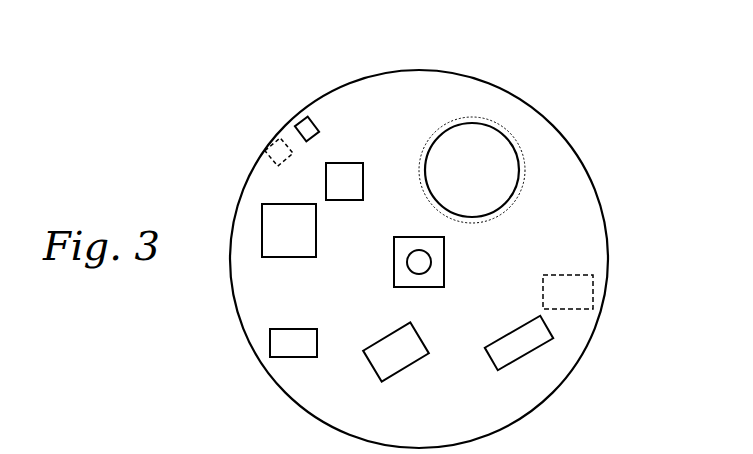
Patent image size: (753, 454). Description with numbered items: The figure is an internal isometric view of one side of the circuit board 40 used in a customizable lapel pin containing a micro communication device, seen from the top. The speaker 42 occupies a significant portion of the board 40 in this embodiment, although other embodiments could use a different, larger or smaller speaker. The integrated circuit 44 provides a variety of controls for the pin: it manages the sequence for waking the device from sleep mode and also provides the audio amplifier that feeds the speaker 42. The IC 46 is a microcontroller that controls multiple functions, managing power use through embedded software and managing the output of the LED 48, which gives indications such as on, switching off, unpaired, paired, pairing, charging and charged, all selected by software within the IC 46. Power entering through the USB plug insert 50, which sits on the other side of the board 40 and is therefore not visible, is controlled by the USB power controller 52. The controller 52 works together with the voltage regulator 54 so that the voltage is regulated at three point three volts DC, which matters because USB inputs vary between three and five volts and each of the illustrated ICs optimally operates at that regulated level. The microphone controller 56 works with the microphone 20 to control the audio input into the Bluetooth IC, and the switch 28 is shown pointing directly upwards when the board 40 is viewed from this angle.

The circuit board 40 is at (568, 59).
The speaker 42 is at (504, 130).
The LED 48 is at (304, 114).
The microphone 20 is at (267, 147).
The microphone controller 56 is at (345, 162).
The IC (microcontroller) 46 is at (262, 231).
The switch 28 is at (430, 256).
The USB plug insert 50 is at (568, 276).
The integrated circuit (IC) 44 is at (553, 337).
The USB power controller 52 is at (422, 358).
The voltage regulator 54 is at (270, 348).